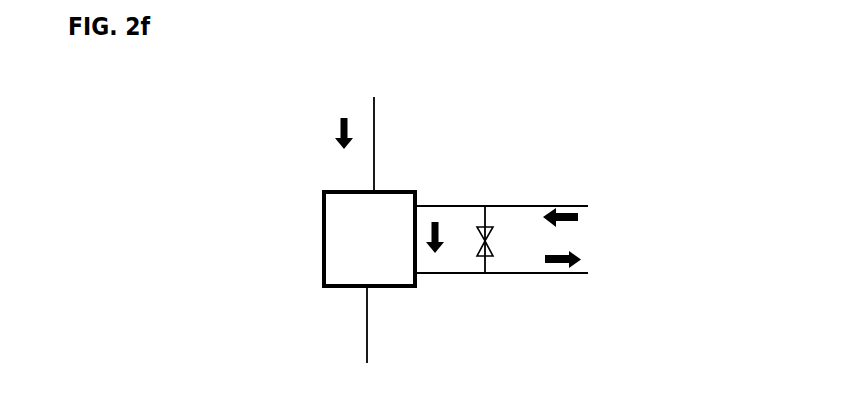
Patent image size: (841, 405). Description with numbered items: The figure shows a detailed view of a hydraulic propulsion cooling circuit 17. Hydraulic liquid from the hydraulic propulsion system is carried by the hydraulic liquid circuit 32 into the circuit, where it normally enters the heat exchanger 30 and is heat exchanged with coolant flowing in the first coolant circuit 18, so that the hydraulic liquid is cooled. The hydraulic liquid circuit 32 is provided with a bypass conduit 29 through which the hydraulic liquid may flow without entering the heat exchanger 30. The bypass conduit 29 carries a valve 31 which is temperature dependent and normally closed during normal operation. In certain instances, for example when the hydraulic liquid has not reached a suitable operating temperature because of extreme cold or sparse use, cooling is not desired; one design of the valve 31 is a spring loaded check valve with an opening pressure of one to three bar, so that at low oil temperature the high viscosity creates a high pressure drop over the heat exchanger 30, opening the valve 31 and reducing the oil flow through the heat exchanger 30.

The hydraulic propulsion cooling circuit 17 is at (306, 167).
The first coolant circuit 18 is at (374, 141).
The bypass conduit 29 is at (485, 218).
The heat exchanger 30 is at (381, 253).
The valve 31 is at (488, 257).
The hydraulic liquid circuit 32 is at (557, 273).